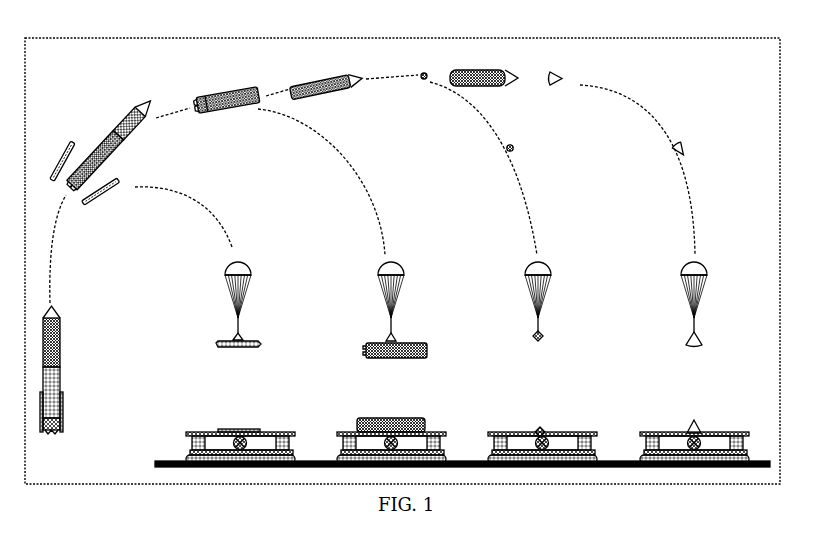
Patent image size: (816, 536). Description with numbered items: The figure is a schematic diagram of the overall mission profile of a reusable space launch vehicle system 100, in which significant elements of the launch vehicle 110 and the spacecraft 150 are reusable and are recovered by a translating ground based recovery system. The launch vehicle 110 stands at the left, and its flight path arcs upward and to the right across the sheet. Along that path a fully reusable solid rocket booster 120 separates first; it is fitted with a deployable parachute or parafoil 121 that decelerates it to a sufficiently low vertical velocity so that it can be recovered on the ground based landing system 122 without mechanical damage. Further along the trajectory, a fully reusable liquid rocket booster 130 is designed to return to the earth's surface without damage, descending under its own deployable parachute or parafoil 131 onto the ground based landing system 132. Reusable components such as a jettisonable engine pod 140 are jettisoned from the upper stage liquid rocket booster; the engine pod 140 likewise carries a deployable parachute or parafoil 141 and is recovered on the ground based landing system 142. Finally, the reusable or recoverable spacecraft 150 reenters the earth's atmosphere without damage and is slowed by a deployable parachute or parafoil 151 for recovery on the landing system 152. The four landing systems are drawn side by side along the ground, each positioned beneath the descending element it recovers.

The reusable space launch vehicle system 100 is at (95, 36).
The launch vehicle 110 is at (65, 378).
The reusable solid rocket booster 120 is at (101, 207).
The deployable parachute or parafoil 121 is at (226, 299).
The ground based landing system 122 is at (236, 429).
The reusable liquid rocket booster 130 is at (232, 116).
The deployable parachute or parafoil 131 is at (378, 299).
The ground based landing system 132 is at (390, 416).
The jettisonable engine pod 140 is at (504, 150).
The deployable parachute or parafoil 141 is at (524, 299).
The ground based landing system 142 is at (540, 418).
The spacecraft 150 is at (672, 153).
The deployable parachute or parafoil 151 is at (680, 299).
The landing system 152 is at (693, 417).